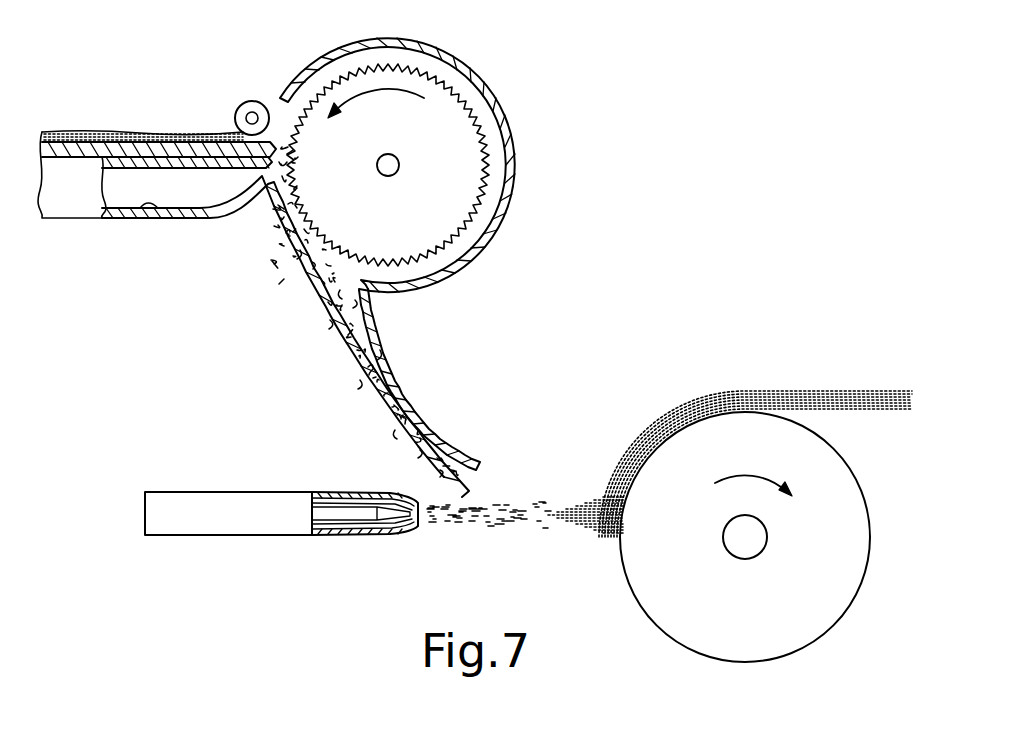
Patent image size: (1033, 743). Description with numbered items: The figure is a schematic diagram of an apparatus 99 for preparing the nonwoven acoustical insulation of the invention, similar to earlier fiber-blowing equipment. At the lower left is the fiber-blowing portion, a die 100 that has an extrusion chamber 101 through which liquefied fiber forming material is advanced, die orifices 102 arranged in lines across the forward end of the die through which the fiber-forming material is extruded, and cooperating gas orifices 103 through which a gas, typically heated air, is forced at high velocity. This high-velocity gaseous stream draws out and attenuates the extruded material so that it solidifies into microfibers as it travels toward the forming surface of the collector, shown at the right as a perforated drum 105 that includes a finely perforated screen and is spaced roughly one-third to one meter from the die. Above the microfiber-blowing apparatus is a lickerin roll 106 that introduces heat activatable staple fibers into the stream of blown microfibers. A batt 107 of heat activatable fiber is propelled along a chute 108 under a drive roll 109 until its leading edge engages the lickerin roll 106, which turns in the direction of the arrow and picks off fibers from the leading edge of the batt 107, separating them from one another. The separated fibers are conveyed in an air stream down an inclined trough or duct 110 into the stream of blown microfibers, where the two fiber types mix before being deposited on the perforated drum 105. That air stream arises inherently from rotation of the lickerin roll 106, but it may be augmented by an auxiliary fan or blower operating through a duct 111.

The apparatus 99 is at (686, 190).
The die 100 is at (226, 484).
The extrusion chamber 101 is at (338, 513).
The die orifices 102 is at (423, 522).
The gas orifices 103 is at (385, 537).
The perforated drum 105 is at (842, 483).
The lickerin roll 106 is at (447, 200).
The batt 107 is at (208, 132).
The chute 108 is at (100, 132).
The drive roll 109 is at (257, 101).
The inclined trough or duct 110 is at (338, 279).
The duct 111 is at (153, 204).